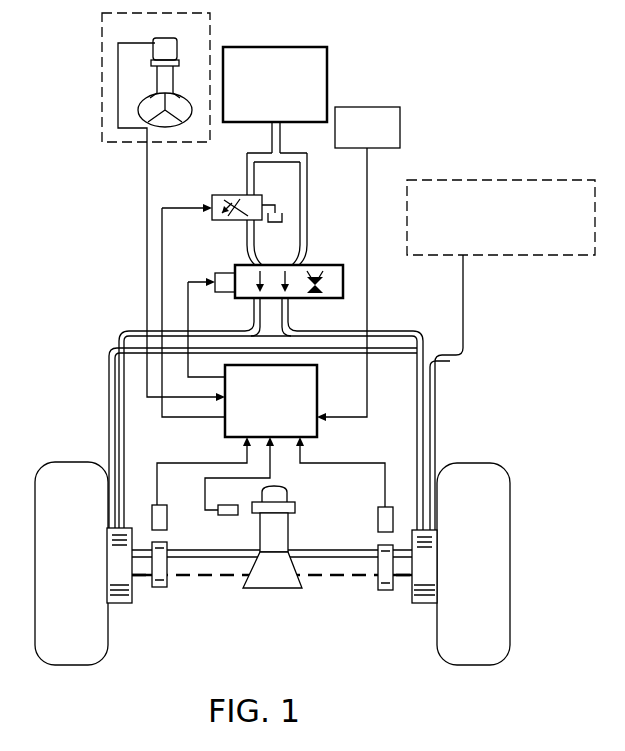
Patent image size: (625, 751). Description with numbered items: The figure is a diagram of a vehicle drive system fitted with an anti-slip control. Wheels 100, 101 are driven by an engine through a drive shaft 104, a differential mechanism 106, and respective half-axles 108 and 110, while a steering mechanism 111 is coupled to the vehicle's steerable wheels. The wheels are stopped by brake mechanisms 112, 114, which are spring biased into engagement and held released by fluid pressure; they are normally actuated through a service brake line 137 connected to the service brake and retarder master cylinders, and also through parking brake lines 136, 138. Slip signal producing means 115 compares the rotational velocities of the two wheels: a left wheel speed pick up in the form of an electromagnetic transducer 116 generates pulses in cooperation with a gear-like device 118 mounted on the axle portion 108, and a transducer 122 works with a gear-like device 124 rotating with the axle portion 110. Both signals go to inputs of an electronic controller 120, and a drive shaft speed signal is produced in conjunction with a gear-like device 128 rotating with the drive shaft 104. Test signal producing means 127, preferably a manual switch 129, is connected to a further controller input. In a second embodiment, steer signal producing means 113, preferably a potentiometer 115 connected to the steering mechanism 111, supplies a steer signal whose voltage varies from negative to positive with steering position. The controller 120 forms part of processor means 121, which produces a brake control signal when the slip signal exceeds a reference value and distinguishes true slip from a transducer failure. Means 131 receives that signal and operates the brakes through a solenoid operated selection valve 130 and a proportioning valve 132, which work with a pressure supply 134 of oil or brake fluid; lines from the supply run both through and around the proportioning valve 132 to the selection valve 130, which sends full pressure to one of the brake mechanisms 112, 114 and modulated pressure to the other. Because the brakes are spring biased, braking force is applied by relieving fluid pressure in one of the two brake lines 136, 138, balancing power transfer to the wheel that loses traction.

The wheel 100 is at (66, 462).
The wheel 101 is at (458, 464).
The drive shaft 104 is at (283, 536).
The differential mechanism 106 is at (265, 592).
The half-axle 108 is at (212, 575).
The half-axle 110 is at (333, 578).
The steering mechanism 111 is at (93, 98).
The brake mechanism 112 is at (130, 606).
The steer signal producing means 113 is at (95, 24).
The brake mechanism 114 is at (418, 603).
The potentiometer 115 is at (176, 42).
The electromagnetic transducer 116 is at (160, 503).
The gear-like device 118 is at (165, 588).
The electronic controller 120 is at (320, 403).
The processor means 121 is at (330, 430).
The transducer 122 is at (378, 512).
The gear-like device 124 is at (380, 590).
The test signal producing means 127 is at (415, 151).
The gear-like device 128 is at (285, 500).
The manual switch 129 is at (400, 133).
The selection valve 130 is at (343, 287).
The brake operating means 131 is at (127, 254).
The proportioning valve 132 is at (228, 195).
The pressure supply 134 is at (328, 80).
The parking brake line 136 is at (112, 366).
The service brake line 137 is at (441, 346).
The parking brake line 138 is at (425, 410).